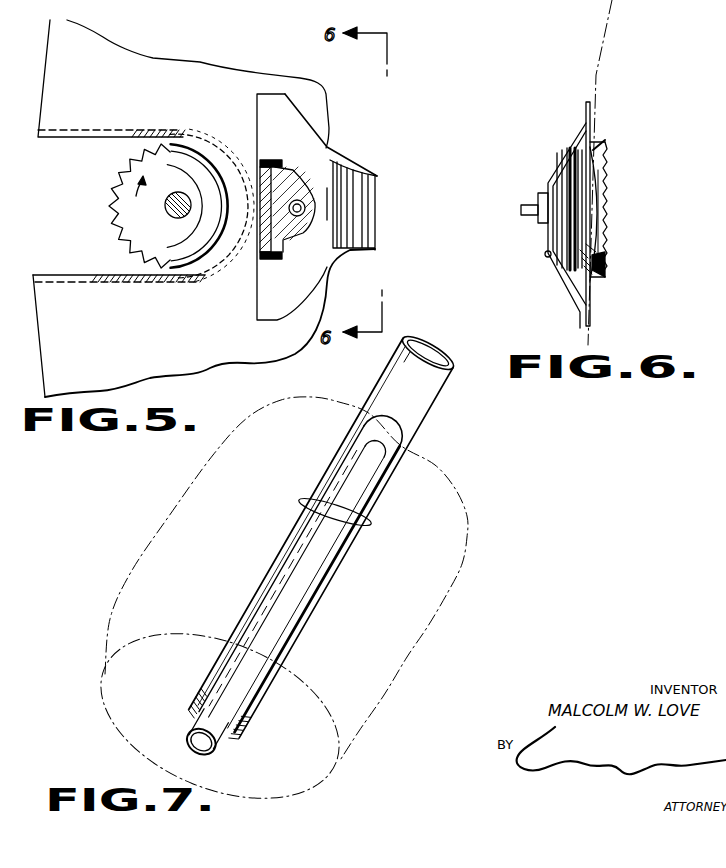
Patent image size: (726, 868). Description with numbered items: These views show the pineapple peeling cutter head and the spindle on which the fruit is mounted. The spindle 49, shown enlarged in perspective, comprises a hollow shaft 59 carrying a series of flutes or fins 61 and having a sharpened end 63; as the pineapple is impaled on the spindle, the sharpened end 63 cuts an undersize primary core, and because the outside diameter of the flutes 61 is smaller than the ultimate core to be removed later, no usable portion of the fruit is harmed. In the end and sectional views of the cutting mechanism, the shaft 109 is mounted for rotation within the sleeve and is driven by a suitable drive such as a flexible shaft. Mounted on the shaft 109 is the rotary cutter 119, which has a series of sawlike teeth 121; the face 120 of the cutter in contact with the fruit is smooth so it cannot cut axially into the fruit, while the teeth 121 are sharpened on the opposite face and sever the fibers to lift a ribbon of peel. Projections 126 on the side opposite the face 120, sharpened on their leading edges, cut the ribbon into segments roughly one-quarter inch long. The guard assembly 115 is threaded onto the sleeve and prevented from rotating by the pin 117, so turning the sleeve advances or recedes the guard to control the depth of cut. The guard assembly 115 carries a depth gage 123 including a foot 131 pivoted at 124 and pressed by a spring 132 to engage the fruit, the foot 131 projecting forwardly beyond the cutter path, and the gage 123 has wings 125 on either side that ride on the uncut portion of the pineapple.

In FIG. 7, the spindle 49 is at (430, 441).
In FIG. 7, the hollow shaft 59 is at (432, 398).
In FIG. 7, the flutes or fins 61 is at (340, 573).
In FIG. 7, the sharpened end 63 is at (186, 749).
In FIG. 5, the shaft 109 is at (188, 220).
In FIG. 5, the guard assembly 115 is at (336, 143).
In FIG. 6, the guard assembly 115 is at (558, 284).
In FIG. 6, the pin 117 is at (530, 207).
In FIG. 5, the rotary cutter 119 is at (146, 205).
In FIG. 6, the rotary cutter 119 is at (605, 226).
In FIG. 6, the face 120 is at (608, 197).
In FIG. 5, the sawlike teeth 121 is at (108, 222).
In FIG. 6, the sawlike teeth 121 is at (606, 182).
In FIG. 5, the depth gage 123 is at (343, 187).
In FIG. 6, the depth gage 123 is at (570, 233).
In FIG. 5, the pivot 124 is at (270, 183).
In FIG. 5, the wings 125 is at (270, 98).
In FIG. 6, the wings 125 is at (586, 112).
In FIG. 5, the projections 126 is at (167, 130).
In FIG. 6, the projections 126 is at (593, 150).
In FIG. 6, the foot 131 is at (606, 260).
In FIG. 5, the spring 132 is at (308, 226).